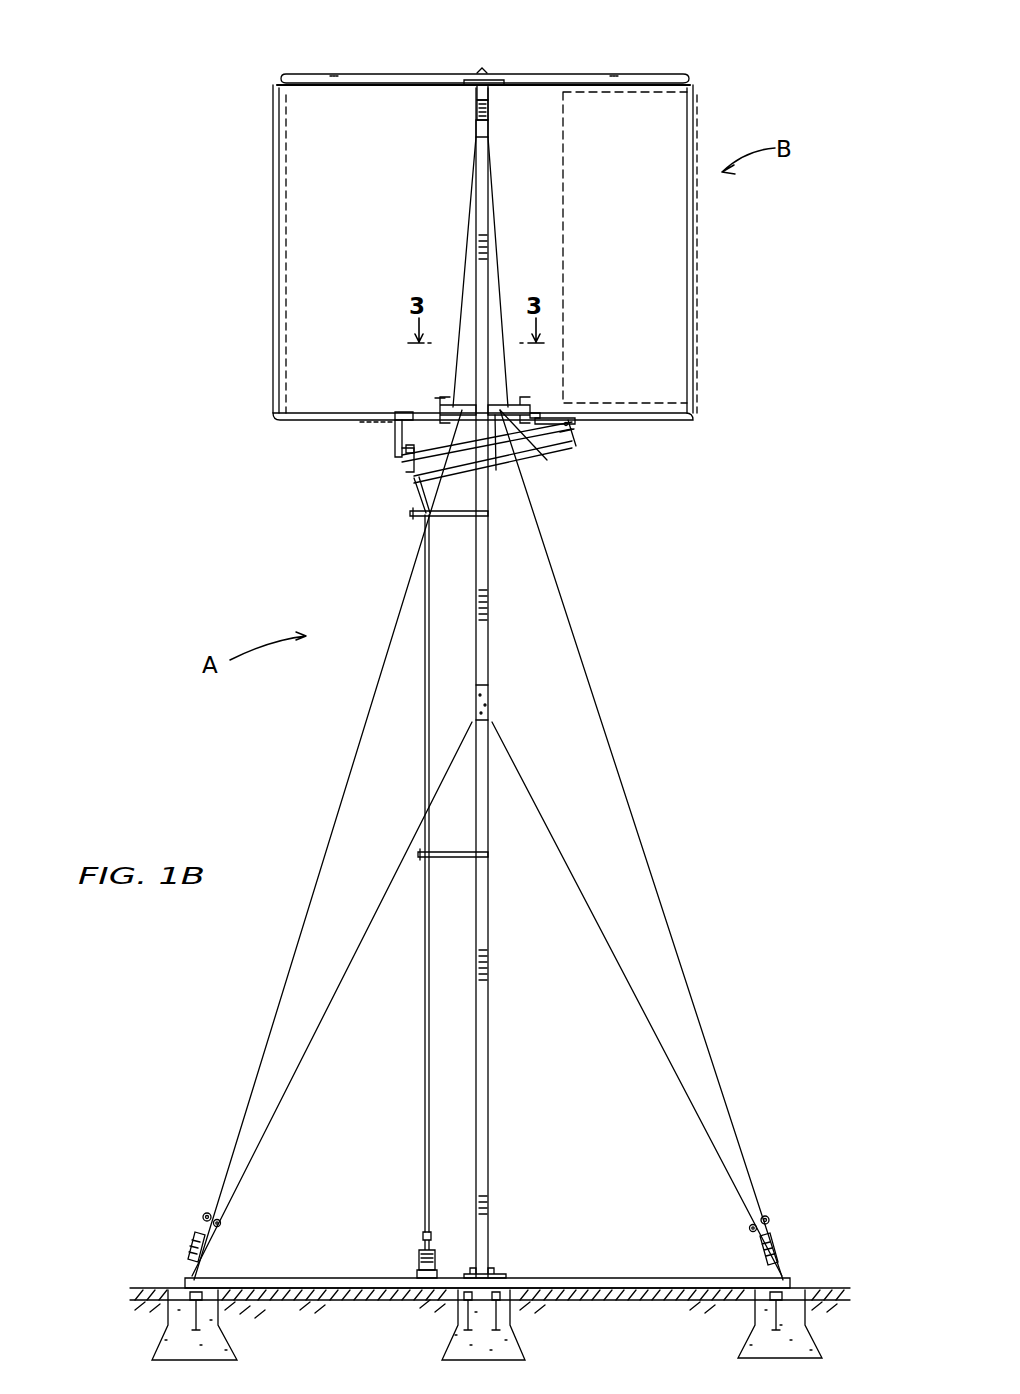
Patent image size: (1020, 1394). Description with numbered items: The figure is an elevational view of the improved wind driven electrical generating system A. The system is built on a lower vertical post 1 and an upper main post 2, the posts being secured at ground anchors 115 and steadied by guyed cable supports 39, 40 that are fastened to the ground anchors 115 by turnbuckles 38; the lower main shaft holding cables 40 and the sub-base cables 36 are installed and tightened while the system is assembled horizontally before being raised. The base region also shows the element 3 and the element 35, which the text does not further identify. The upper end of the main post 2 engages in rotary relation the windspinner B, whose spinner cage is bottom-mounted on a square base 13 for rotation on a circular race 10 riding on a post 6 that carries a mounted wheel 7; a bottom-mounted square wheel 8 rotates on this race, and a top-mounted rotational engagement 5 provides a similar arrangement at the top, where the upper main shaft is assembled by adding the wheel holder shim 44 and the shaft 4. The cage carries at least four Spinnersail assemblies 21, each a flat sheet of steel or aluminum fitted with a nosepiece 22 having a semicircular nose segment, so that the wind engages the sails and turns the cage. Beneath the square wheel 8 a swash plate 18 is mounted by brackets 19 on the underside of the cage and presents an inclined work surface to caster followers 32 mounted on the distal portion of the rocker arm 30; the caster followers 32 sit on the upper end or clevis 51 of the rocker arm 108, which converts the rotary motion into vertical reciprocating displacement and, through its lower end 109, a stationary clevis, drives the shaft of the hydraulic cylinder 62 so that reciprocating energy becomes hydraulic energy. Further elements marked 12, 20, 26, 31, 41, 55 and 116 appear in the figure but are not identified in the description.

The lower vertical post 1 is at (490, 1030).
The upper main post 2 is at (490, 612).
The base plate 3 is at (308, 1280).
The shaft 4 is at (476, 94).
The top-mounted rotational engagement 5 is at (490, 86).
The post 6 is at (450, 405).
The mounted wheel 7 is at (447, 408).
The bottom-mounted square wheel 8 is at (516, 450).
The circular race 10 is at (412, 415).
The top frame member 12 is at (668, 75).
The square base 13 is at (670, 420).
The swash plate 18 is at (402, 456).
The brackets 19 is at (397, 440).
The bracket 20 is at (578, 422).
The Spinnersail assembly 21 is at (668, 178).
The nosepiece 22 is at (287, 240).
The pivot pin 26 is at (572, 426).
The rocker arm 30 is at (540, 455).
The brace 31 is at (494, 472).
The caster followers 32 is at (406, 468).
The anchor bolt 35 is at (762, 1300).
The sub-base cables 36 is at (312, 1298).
The turnbuckles 38 is at (196, 1240).
The guyed cable supports 39 is at (390, 632).
The lower main shaft holding cables 40 is at (332, 1000).
The collar 41 is at (490, 128).
The wheel holder shim 44 is at (490, 112).
The upper end of rocker arm (clevis) 51 is at (422, 490).
The crossbar 55 is at (460, 519).
The hydraulic cylinder 62 is at (432, 1262).
The rocker arm (connecting rod) 108 is at (424, 768).
The lower end of rocker arm (stationary clevis) 109 is at (423, 1236).
The ground anchors 115 is at (166, 1335).
The support cables 116 is at (479, 140).